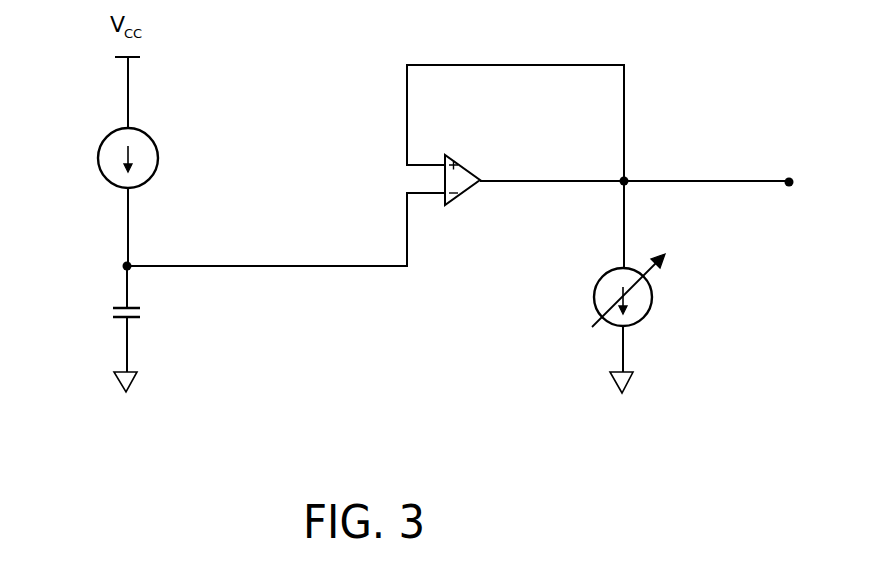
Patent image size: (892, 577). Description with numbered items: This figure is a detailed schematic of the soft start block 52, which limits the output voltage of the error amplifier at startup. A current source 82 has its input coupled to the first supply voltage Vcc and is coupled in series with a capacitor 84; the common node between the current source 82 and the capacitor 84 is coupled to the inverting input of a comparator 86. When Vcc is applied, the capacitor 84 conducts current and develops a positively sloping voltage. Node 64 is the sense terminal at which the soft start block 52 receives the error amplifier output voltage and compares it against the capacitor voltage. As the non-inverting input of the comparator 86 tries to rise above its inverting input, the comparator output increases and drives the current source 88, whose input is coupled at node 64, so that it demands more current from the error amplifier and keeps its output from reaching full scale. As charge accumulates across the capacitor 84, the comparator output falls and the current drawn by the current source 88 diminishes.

The soft start block 52 is at (265, 422).
The node 64 is at (795, 178).
The current source 82 is at (100, 165).
The capacitor 84 is at (122, 303).
The comparator 86 is at (470, 168).
The current source 88 is at (592, 297).